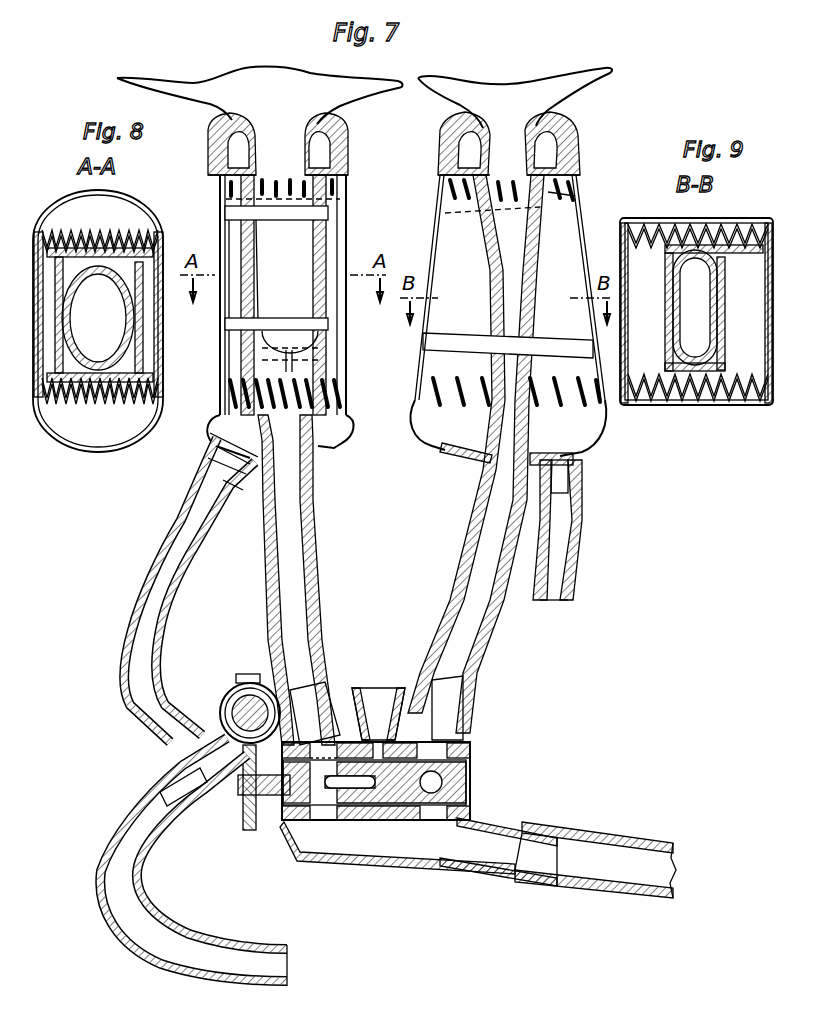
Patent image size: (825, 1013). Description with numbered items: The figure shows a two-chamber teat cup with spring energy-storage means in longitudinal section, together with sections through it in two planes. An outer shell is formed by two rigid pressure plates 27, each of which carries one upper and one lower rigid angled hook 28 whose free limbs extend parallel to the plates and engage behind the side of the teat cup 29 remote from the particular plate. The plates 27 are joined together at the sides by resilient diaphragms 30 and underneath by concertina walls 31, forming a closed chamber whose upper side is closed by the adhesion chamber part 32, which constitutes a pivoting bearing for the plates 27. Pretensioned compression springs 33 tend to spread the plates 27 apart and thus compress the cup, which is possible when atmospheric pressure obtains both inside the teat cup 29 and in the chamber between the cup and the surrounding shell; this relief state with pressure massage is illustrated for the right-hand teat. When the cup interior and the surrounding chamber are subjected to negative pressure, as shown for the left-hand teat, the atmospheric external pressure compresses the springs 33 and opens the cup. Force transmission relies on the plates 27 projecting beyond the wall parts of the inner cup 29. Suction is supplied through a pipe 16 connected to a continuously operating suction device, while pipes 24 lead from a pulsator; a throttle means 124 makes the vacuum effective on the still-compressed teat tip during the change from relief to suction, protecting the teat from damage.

In FIG. 7, the pipe 16 is at (520, 828).
In FIG. 7, the pipes 24 is at (236, 950).
In FIG. 9, the rigid pressure plates 27 is at (766, 272).
In FIG. 7, the rigid angled hook 28 is at (322, 224).
In FIG. 9, the rigid angled hook 28 is at (670, 263).
In FIG. 7, the teat cup 29 is at (534, 254).
In FIG. 8, the teat cup 29 is at (120, 298).
In FIG. 9, the teat cup 29 is at (707, 285).
In FIG. 8, the resilient diaphragms 30 is at (112, 190).
In FIG. 9, the resilient diaphragms 30 is at (644, 218).
In FIG. 7, the concertina walls 31 is at (436, 446).
In FIG. 7, the adhesion chamber part 32 is at (560, 150).
In FIG. 8, the pretensioned compression springs 33 is at (48, 232).
In FIG. 9, the pretensioned compression springs 33 is at (742, 222).
In FIG. 7, the throttle means 124 is at (178, 744).